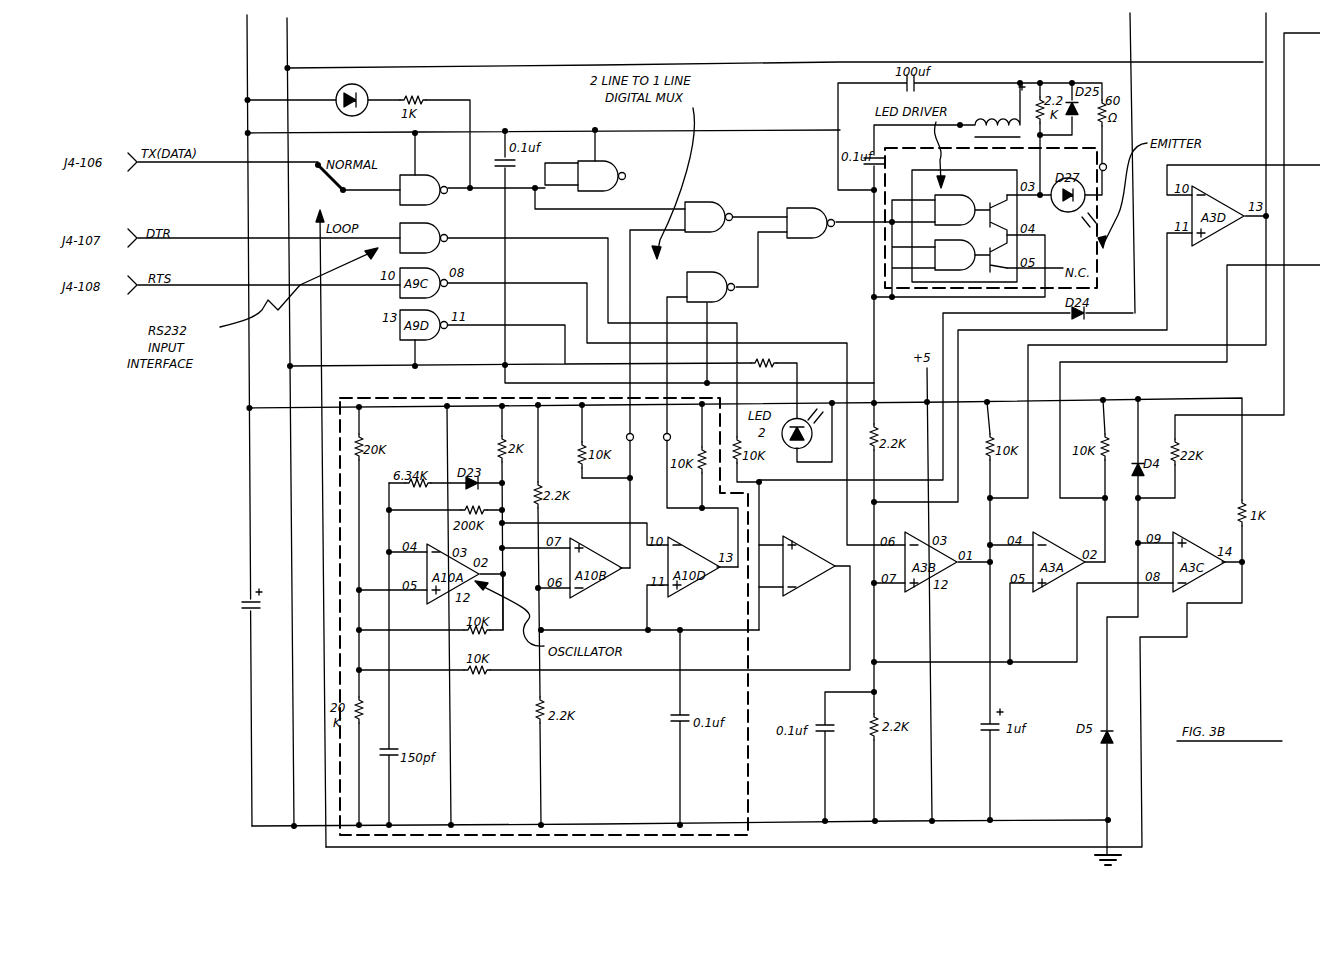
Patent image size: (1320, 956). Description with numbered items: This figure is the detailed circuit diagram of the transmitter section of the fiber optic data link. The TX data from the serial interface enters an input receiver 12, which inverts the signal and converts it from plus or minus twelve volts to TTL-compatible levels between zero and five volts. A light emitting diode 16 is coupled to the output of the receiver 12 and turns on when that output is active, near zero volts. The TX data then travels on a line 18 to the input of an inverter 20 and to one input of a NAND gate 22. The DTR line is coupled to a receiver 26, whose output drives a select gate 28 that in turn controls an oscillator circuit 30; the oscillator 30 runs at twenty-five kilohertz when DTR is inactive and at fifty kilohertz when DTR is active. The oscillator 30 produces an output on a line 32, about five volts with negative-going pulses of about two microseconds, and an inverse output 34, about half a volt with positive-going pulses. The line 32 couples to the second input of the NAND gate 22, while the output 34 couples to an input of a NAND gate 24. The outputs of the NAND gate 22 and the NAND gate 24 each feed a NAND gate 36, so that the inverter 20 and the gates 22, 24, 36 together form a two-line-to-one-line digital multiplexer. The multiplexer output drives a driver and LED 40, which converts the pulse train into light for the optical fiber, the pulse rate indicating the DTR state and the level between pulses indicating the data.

The input receiver 12 is at (422, 175).
The light emitting diode 16 is at (370, 86).
The line 18 is at (568, 211).
The inverter 20 is at (620, 160).
The NAND gate 22 is at (708, 233).
The NAND gate 24 is at (728, 305).
The receiver 26 is at (446, 222).
The select gate 28 is at (797, 598).
The oscillator circuit 30 is at (752, 772).
The line 32 is at (631, 500).
The output 34 is at (685, 512).
The NAND gate 36 is at (813, 240).
The driver and LED 40 is at (887, 265).